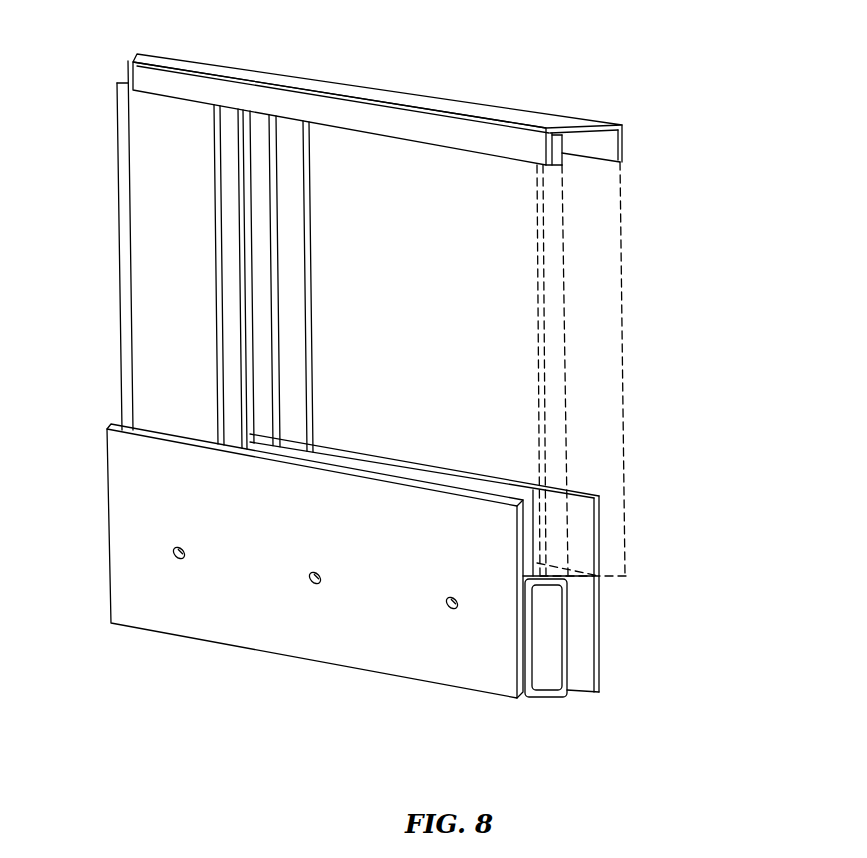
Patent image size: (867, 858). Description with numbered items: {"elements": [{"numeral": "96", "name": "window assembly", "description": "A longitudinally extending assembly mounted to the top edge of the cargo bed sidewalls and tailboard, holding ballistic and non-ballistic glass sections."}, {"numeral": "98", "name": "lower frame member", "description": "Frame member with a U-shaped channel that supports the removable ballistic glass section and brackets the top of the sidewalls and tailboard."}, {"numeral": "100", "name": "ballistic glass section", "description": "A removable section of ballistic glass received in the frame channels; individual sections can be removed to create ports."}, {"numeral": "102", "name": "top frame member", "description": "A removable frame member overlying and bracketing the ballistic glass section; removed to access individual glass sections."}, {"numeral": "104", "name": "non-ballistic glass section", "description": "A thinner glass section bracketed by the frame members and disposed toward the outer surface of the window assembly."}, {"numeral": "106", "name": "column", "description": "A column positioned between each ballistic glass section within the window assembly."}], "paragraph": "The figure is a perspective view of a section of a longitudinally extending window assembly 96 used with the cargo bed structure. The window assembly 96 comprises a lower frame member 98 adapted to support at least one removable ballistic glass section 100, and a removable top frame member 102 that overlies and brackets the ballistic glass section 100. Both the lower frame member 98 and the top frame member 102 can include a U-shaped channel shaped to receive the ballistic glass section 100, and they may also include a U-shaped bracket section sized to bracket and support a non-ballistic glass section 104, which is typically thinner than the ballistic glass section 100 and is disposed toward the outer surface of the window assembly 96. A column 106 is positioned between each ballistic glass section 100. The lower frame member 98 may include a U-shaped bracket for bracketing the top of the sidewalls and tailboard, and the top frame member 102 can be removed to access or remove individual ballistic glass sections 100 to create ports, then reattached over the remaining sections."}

The top rail 96 is at (640, 134).
The bottom track 98 is at (602, 653).
The hidden vertical member 100 is at (607, 450).
The top rail end flange 102 is at (622, 153).
The hidden vertical member 104 is at (543, 332).
The side stile 106 is at (165, 253).